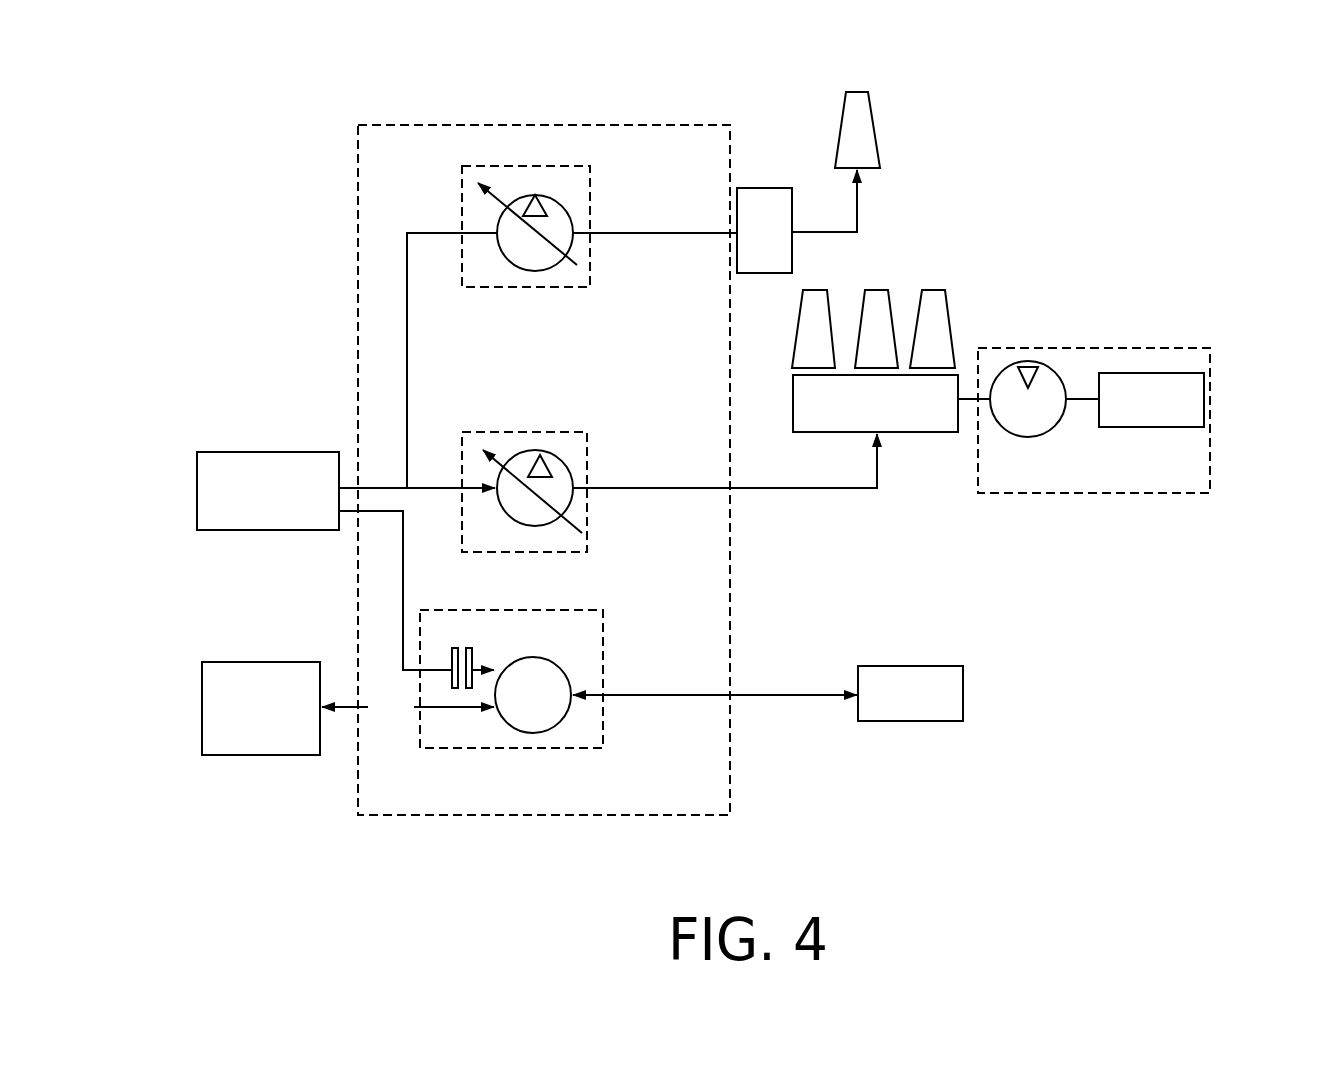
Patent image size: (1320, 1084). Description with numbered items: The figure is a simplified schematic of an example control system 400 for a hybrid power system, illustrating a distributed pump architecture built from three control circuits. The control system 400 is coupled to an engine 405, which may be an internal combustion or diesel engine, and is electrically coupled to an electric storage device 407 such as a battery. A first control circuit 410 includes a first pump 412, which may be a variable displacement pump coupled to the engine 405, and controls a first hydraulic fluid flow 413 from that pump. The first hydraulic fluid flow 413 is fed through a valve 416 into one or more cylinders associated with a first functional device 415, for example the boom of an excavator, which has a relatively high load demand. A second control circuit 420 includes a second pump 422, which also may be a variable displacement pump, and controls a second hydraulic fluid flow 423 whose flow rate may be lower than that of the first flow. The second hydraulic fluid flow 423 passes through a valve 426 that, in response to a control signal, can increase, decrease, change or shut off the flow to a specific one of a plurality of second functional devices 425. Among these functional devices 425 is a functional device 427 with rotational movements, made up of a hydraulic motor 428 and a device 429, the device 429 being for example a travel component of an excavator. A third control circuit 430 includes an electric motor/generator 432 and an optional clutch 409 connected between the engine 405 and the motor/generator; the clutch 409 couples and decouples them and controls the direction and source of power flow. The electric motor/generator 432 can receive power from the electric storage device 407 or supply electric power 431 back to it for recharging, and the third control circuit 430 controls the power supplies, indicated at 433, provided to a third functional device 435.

The control system 400 is at (346, 211).
The engine 405 is at (197, 490).
The electric storage device 407 is at (202, 695).
The clutch 409 is at (458, 648).
The first control circuit 410 is at (535, 208).
The first pump 412 is at (513, 268).
The first hydraulic fluid flow 413 is at (661, 232).
The first functional device 415 is at (868, 92).
The valve 416 is at (770, 188).
The second control circuit 420 is at (558, 452).
The second pump 422 is at (563, 455).
The second hydraulic fluid flow 423 is at (682, 488).
The second functional device 425 is at (815, 290).
The valve 426 is at (948, 432).
The functional device 427 is at (1110, 403).
The hydraulic motor 428 is at (1030, 437).
The device 429 is at (1206, 398).
The third control circuit 430 is at (490, 645).
The electric power 431 is at (408, 707).
The electric motor/generator 432 is at (515, 730).
The mechanical connection 433 is at (673, 695).
The third functional device 435 is at (965, 695).